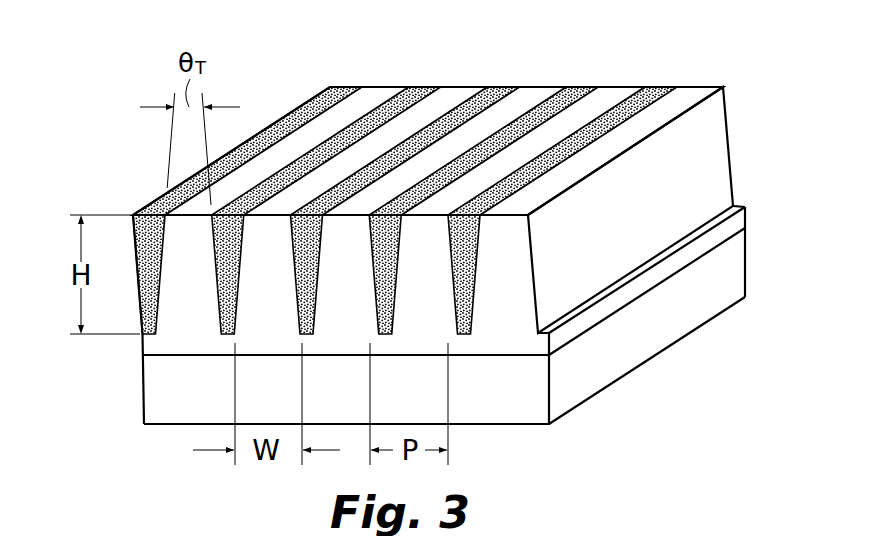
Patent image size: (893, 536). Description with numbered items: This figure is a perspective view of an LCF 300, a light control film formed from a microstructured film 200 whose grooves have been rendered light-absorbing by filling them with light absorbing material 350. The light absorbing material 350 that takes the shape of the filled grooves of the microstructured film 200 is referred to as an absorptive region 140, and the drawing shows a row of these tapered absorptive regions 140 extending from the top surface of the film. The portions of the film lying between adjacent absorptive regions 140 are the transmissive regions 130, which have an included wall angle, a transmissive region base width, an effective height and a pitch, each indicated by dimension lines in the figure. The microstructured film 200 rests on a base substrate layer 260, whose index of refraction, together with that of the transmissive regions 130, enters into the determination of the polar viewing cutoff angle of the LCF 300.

The LCF 300 is at (682, 40).
The microstructured film 200 is at (672, 219).
The base substrate layer 260 is at (212, 401).
The light absorbing material 350 is at (412, 90).
The transmissive regions 130 is at (508, 282).
The absorptive region 140 is at (467, 282).